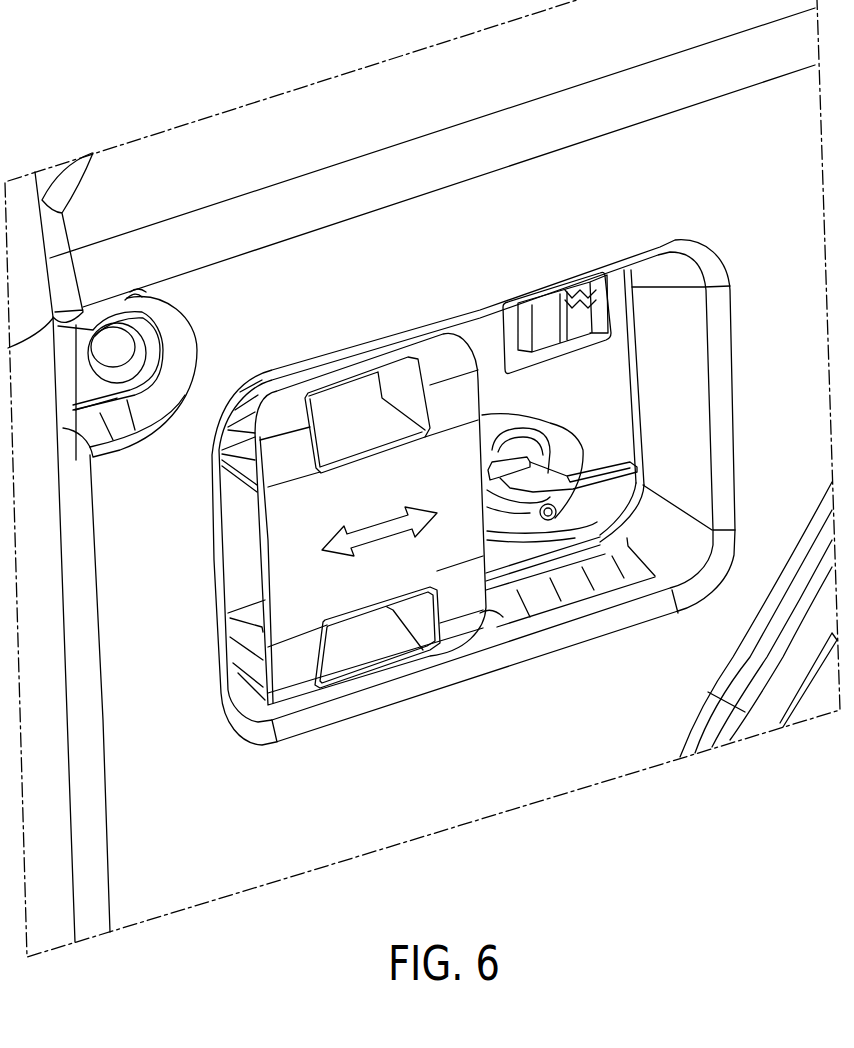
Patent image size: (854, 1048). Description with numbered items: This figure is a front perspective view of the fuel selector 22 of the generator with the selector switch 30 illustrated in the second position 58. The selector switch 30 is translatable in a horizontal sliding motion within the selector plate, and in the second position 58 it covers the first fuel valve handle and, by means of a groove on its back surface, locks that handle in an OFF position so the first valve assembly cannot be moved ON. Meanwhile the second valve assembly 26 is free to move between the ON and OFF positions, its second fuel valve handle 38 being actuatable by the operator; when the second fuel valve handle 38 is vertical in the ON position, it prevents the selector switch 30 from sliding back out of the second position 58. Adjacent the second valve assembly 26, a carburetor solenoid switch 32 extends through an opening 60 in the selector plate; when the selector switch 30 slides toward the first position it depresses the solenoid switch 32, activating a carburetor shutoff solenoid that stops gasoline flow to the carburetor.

The fuel selector 22 is at (732, 212).
The second valve assembly 26 is at (578, 406).
The selector switch 30 is at (293, 609).
The carburetor solenoid switch 32 is at (585, 302).
The second fuel valve handle 38 is at (601, 457).
The second position 58 is at (345, 320).
The opening 60 is at (512, 324).